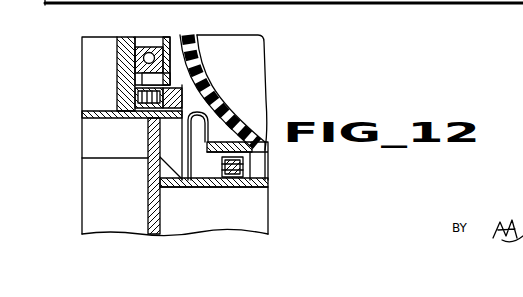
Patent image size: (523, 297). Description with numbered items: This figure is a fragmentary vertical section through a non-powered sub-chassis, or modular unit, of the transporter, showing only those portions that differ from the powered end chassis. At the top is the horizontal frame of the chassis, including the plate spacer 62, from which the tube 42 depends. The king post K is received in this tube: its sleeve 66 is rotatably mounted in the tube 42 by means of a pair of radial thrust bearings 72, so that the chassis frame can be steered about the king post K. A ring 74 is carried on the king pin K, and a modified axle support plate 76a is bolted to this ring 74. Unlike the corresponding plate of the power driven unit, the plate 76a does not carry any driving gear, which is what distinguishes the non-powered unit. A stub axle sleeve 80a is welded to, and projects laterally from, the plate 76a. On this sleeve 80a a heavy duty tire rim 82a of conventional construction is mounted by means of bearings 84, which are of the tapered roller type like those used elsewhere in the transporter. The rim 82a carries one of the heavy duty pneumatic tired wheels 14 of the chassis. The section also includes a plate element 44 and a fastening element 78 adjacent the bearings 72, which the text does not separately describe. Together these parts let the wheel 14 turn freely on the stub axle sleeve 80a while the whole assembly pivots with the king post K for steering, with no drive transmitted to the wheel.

The plate spacer 62 is at (355, 0).
The sleeve 66 is at (92, 47).
The king post K is at (108, 68).
The radial thrust bearings 72 is at (153, 47).
The tube 42 is at (165, 63).
The nut 78 is at (163, 93).
The ring 74 is at (176, 102).
The heavy duty pneumatic tired wheel 14 is at (266, 70).
The flange plate 44 is at (96, 118).
The modified axle support plate 76a is at (108, 176).
The heavy duty tire rim 82a is at (268, 158).
The bearings 84 is at (243, 168).
The stub axle sleeve 80a is at (240, 189).